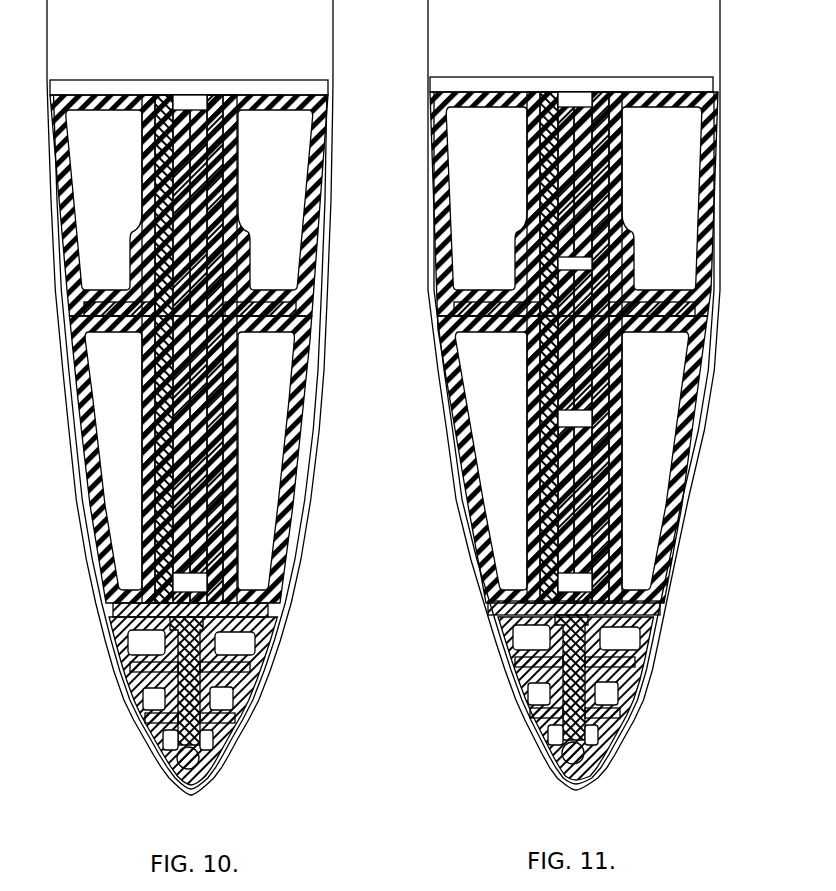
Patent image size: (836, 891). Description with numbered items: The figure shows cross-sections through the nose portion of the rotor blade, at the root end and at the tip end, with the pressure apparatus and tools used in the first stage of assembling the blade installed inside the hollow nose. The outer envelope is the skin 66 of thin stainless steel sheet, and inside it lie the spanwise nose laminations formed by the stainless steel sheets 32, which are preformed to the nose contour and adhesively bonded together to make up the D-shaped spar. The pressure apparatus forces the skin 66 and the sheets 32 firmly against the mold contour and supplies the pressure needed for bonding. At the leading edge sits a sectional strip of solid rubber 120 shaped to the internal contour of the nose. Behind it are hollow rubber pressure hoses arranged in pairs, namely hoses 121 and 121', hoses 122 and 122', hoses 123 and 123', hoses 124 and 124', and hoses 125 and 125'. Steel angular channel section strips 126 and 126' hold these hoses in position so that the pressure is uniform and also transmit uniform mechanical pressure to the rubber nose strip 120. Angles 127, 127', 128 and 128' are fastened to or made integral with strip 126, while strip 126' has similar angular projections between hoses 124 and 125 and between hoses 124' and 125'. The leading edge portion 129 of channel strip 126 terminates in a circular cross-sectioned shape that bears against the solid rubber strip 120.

In FIG. 10, the stainless steel sheets 32 is at (208, 779).
In FIG. 11, the stainless steel sheets 32 is at (592, 777).
In FIG. 11, the skin 66 is at (428, 55).
In FIG. 10, the sectional strip of solid rubber 120 is at (176, 777).
In FIG. 11, the sectional strip of solid rubber 120 is at (563, 773).
In FIG. 10, the hollow rubber pressure hose 121 is at (248, 742).
In FIG. 11, the hollow rubber pressure hose 121 is at (634, 739).
In FIG. 10, the hollow rubber pressure hose 121' is at (128, 745).
In FIG. 11, the hollow rubber pressure hose 121' is at (515, 743).
In FIG. 10, the hollow rubber pressure hose 122 is at (260, 699).
In FIG. 11, the hollow rubber pressure hose 122 is at (646, 693).
In FIG. 10, the hollow rubber pressure hose 122' is at (117, 700).
In FIG. 11, the hollow rubber pressure hose 122' is at (496, 697).
In FIG. 10, the hollow rubber pressure hose 123 is at (273, 644).
In FIG. 11, the hollow rubber pressure hose 123 is at (659, 638).
In FIG. 10, the hollow rubber pressure hose 123' is at (112, 644).
In FIG. 11, the hollow rubber pressure hose 123' is at (490, 640).
In FIG. 10, the hollow rubber pressure hose 124 is at (274, 459).
In FIG. 11, the hollow rubber pressure hose 124 is at (656, 459).
In FIG. 10, the hollow rubber pressure hose 124' is at (105, 459).
In FIG. 11, the hollow rubber pressure hose 124' is at (490, 459).
In FIG. 10, the hollow rubber pressure hose 125 is at (280, 205).
In FIG. 11, the hollow rubber pressure hose 125 is at (668, 204).
In FIG. 10, the hollow rubber pressure hose 125' is at (97, 205).
In FIG. 11, the hollow rubber pressure hose 125' is at (479, 204).
In FIG. 10, the steel angular channel section strip 126 is at (243, 681).
In FIG. 11, the steel angular channel section strip 126 is at (629, 677).
In FIG. 10, the steel angular channel section strip 126' is at (257, 349).
In FIG. 11, the steel angular channel section strip 126' is at (638, 347).
In FIG. 10, the angle 127 is at (253, 724).
In FIG. 11, the angle 127 is at (640, 712).
In FIG. 10, the angle 127' is at (125, 724).
In FIG. 11, the angle 127' is at (505, 722).
In FIG. 10, the angle 128 is at (263, 663).
In FIG. 11, the angle 128 is at (648, 657).
In FIG. 10, the angle 128' is at (119, 665).
In FIG. 11, the angle 128' is at (498, 667).
In FIG. 10, the leading edge portion of channel strip 129 is at (208, 758).
In FIG. 11, the leading edge portion of channel strip 129 is at (602, 753).